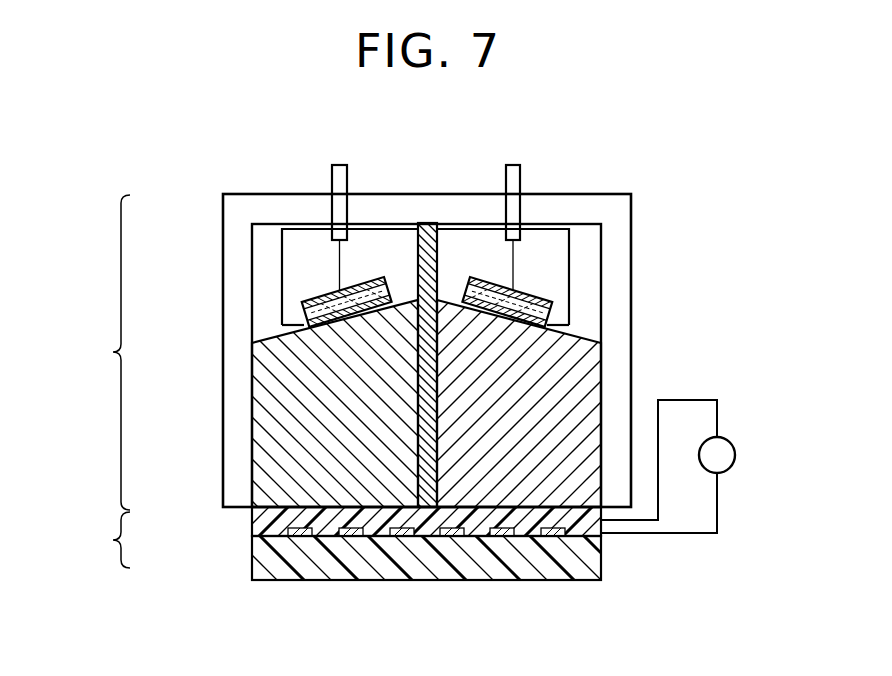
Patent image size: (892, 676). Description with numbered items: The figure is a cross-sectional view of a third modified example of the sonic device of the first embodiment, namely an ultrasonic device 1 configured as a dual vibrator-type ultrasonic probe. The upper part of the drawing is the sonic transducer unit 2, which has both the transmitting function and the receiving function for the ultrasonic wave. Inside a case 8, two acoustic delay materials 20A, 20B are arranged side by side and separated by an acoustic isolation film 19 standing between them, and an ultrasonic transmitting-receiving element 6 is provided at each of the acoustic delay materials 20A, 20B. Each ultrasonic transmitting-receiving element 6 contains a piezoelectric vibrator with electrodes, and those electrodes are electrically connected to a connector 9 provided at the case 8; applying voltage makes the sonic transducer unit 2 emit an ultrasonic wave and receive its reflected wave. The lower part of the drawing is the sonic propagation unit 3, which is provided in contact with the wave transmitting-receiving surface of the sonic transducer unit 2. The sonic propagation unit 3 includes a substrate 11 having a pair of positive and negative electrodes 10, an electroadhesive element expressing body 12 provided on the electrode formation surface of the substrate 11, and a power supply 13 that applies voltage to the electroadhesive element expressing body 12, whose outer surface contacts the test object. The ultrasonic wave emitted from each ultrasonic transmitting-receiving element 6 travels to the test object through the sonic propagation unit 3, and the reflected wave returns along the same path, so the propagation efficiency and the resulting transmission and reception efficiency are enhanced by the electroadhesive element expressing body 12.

The ultrasonic device 1 is at (650, 150).
The sonic transducer unit 2 is at (108, 352).
The sonic propagation unit 3 is at (108, 540).
The ultrasonic transmitting-receiving element 6 is at (302, 313).
The case 8 is at (222, 205).
The connector 9 is at (333, 182).
The electrodes 10 is at (303, 537).
The substrate 11 is at (276, 528).
The electroadhesive element expressing body 12 is at (415, 566).
The power supply 13 is at (736, 450).
The acoustic isolation film 19 is at (426, 222).
The acoustic delay material 20A is at (288, 378).
The acoustic delay material 20B is at (552, 388).